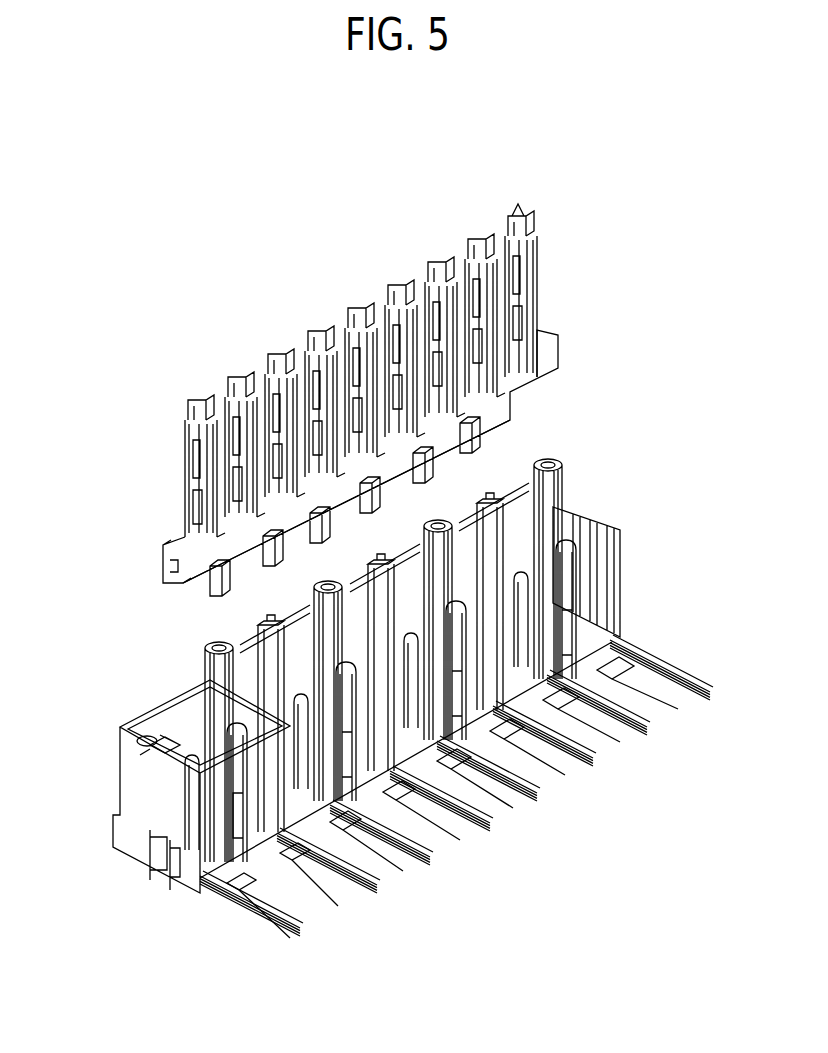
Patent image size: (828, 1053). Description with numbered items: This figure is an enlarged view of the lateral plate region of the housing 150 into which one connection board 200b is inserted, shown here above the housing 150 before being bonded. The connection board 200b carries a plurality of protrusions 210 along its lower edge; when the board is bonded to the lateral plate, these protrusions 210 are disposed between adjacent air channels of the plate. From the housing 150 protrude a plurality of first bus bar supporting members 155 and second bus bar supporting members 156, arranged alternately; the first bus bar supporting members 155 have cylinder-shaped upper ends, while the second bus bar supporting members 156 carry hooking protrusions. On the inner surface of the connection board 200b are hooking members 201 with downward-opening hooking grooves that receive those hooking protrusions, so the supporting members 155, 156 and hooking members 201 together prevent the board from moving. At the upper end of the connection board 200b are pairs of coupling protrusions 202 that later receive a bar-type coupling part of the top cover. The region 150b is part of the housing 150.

The housing 150 is at (370, 725).
The receiving cavity 150b is at (195, 757).
The first bus bar supporting member 155 is at (235, 708).
The second bus bar supporting member 156 is at (225, 660).
The connection board 200b is at (411, 381).
The hooking member 201 is at (360, 340).
The coupling protrusion 202 is at (513, 212).
The protrusion 210 is at (445, 462).